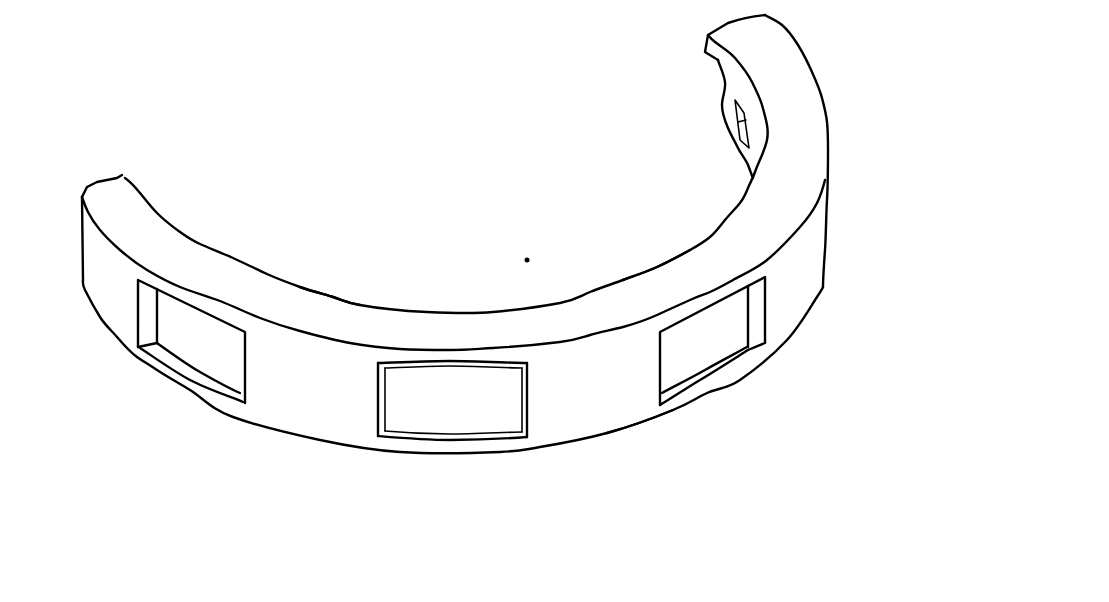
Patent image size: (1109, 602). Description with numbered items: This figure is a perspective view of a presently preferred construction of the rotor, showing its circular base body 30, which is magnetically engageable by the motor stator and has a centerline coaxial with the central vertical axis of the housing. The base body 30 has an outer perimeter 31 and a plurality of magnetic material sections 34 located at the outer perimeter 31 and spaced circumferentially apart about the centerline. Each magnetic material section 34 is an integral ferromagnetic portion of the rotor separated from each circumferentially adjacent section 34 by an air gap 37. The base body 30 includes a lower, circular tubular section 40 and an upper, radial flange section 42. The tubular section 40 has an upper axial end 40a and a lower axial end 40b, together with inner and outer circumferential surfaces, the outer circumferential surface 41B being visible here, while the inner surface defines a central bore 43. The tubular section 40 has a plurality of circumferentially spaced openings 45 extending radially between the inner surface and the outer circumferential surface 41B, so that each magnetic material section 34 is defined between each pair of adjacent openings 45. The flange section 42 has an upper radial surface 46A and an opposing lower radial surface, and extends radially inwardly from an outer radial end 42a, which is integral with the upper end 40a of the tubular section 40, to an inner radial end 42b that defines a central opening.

The circular base body 30 is at (860, 100).
The outer perimeter 31 is at (233, 418).
The magnetic material section 34 is at (799, 281).
The air gap 37 is at (708, 354).
The tubular section 40 is at (565, 463).
The upper axial end 40a is at (567, 345).
The lower axial end 40b is at (496, 452).
The outer circumferential surface 41B is at (628, 393).
The radial flange section 42 is at (140, 212).
The outer radial end 42a is at (92, 190).
The inner radial end 42b is at (648, 275).
The central bore 43 is at (527, 260).
The opening 45 is at (145, 340).
The upper radial surface 46A is at (335, 313).